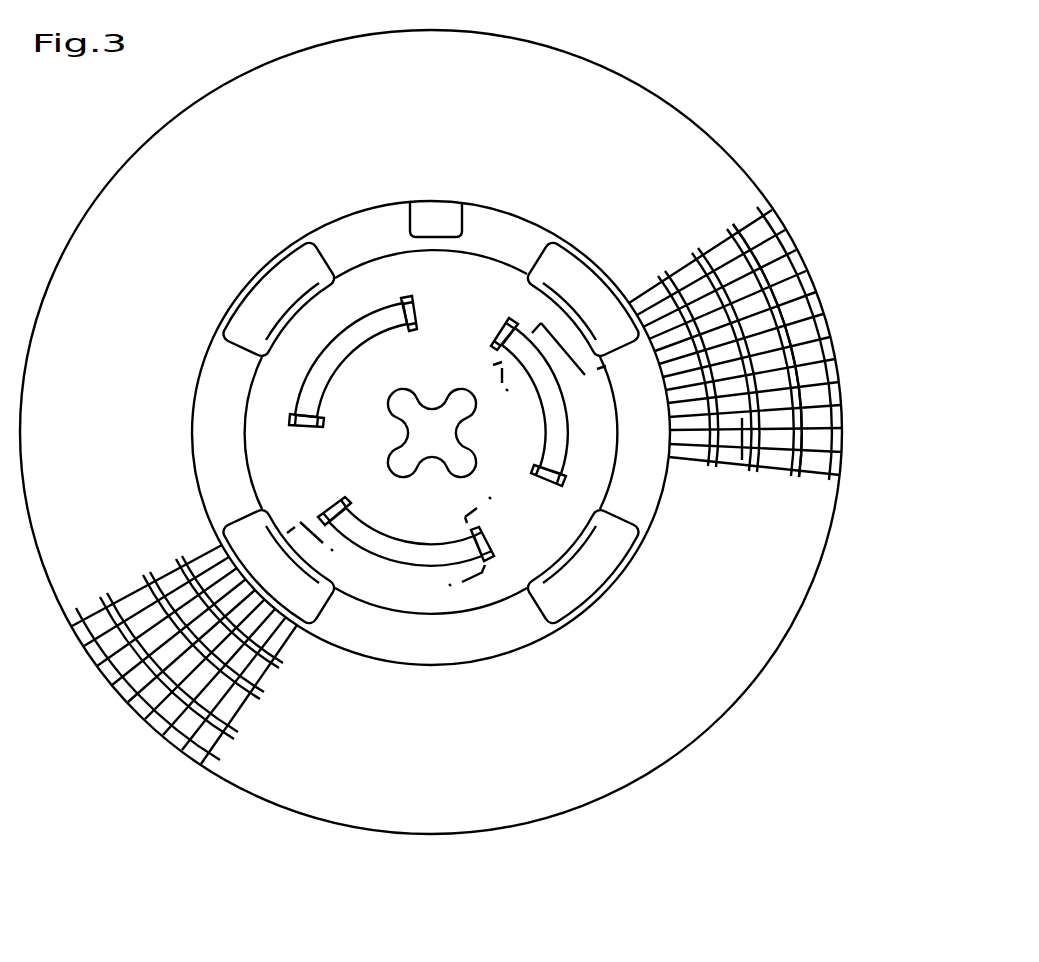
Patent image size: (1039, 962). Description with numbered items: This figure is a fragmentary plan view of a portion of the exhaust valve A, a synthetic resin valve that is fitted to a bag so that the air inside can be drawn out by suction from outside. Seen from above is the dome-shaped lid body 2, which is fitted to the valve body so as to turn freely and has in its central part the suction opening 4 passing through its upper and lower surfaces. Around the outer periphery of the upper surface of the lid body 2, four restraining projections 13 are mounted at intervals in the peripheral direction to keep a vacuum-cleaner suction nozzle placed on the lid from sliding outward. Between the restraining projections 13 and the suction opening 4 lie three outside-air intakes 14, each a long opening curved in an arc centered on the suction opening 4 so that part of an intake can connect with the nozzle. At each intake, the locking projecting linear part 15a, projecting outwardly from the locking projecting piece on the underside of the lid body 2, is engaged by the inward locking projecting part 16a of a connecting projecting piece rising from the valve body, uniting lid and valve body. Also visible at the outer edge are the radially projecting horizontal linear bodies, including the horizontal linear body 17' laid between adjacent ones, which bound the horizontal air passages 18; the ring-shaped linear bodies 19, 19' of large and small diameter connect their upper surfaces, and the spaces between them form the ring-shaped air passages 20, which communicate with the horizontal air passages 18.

The lid body 2 is at (481, 270).
The suction opening 4 is at (447, 425).
The restraining projections 13 is at (264, 287).
The outside-air intakes 14 is at (428, 420).
The locking projecting linear part 15a is at (349, 347).
The locking projecting part 16a is at (298, 399).
The horizontal linear body 17' is at (722, 473).
The horizontal air passages 18 is at (766, 240).
The ring-shaped linear body 19 is at (820, 343).
The ring-shaped linear body 19' is at (817, 350).
The ring-shaped air passages 20 is at (743, 208).
The exhaust valve A is at (707, 752).